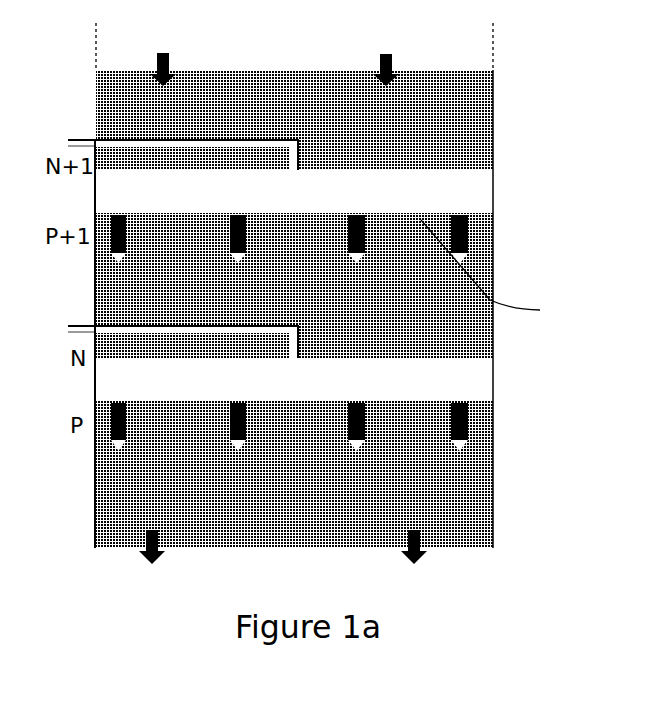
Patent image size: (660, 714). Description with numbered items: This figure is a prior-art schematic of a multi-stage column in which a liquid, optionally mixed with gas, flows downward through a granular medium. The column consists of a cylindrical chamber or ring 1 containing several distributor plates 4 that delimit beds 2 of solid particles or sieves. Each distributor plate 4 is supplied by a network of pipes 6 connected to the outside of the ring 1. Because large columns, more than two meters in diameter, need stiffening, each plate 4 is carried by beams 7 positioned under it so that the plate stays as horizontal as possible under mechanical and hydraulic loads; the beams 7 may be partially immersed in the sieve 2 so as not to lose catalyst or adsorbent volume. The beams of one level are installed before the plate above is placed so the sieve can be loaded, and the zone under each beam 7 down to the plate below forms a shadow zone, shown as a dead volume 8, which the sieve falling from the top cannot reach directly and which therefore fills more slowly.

The cylindrical chamber or ring 1 is at (480, 378).
The bed of solid particles or sieve 2 is at (430, 300).
The distributor plate 4 is at (430, 162).
The network of pipes 6 is at (165, 125).
The beam 7 is at (467, 185).
The dead volume 8 is at (450, 250).